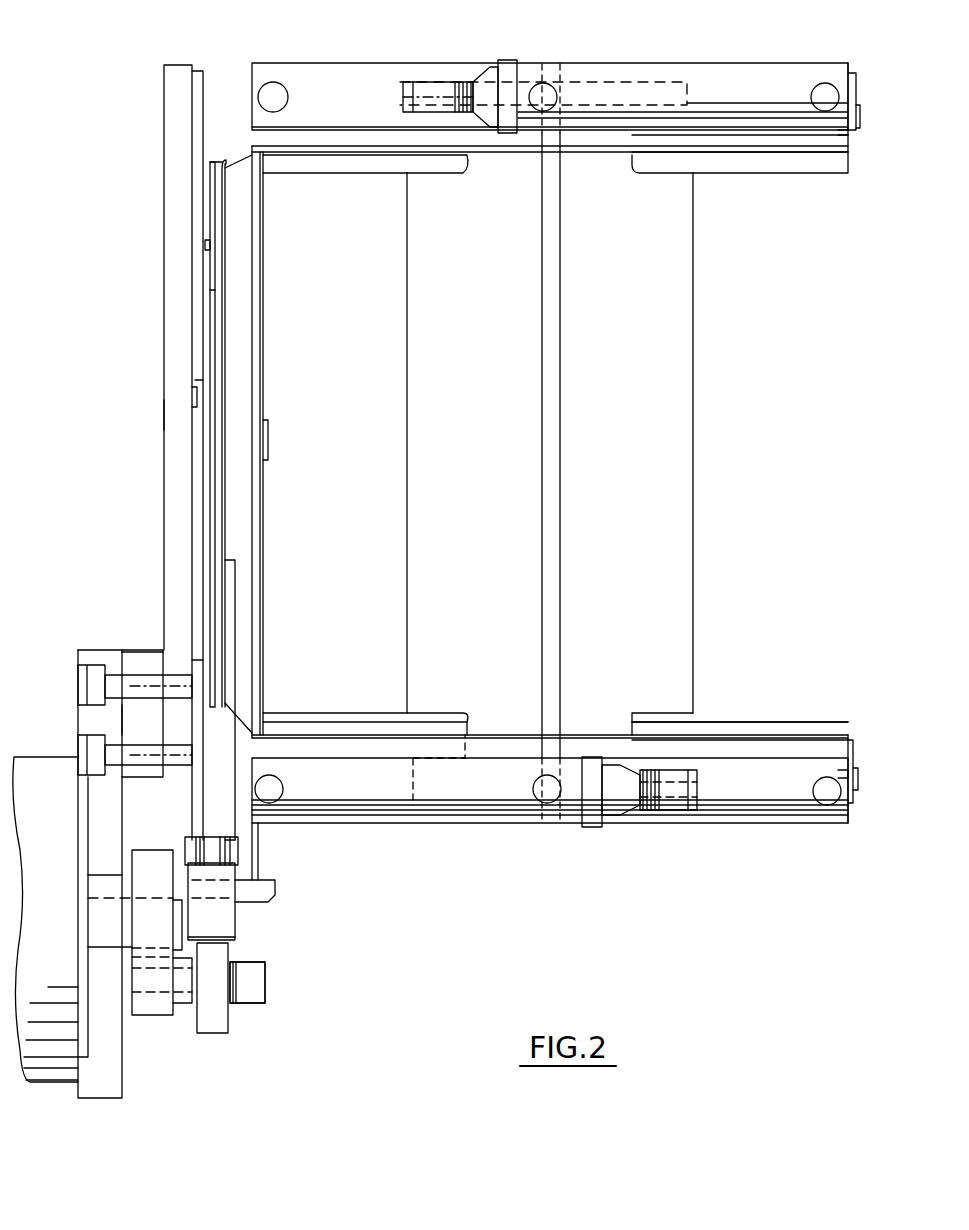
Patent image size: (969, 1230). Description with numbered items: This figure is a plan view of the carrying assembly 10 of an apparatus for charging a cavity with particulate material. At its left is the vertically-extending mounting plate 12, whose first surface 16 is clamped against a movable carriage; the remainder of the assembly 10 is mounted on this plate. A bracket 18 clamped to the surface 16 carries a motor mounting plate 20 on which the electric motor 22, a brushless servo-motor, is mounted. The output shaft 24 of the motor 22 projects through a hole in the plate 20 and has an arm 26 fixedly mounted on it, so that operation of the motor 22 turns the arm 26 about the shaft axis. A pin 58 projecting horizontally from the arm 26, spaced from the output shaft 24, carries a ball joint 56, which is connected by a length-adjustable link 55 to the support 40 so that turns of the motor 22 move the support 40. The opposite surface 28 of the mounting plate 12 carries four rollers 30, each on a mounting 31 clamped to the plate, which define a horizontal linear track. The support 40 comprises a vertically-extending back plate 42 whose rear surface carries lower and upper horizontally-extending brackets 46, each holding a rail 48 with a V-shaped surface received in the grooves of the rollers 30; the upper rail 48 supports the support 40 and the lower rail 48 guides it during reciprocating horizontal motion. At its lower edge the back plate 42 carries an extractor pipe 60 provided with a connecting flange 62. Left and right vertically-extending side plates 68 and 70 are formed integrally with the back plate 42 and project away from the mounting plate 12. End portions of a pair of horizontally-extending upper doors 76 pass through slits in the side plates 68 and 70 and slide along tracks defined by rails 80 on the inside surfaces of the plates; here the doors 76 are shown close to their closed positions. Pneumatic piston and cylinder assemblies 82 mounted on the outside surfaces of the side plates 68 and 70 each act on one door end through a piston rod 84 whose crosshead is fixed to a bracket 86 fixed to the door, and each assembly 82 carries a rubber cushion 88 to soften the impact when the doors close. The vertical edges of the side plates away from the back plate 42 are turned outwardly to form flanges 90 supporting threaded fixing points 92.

The carrying assembly 10 is at (345, 866).
The mounting plate 12 is at (178, 415).
The first surface 16 is at (170, 78).
The bracket 18 is at (135, 660).
The motor mounting plate 20 is at (110, 1082).
The electric motor 22 is at (48, 768).
The output shaft 24 is at (123, 938).
The arm 26 is at (150, 858).
The opposite surface 28 is at (196, 95).
The rollers 30 is at (222, 165).
The mounting 31 is at (212, 113).
The support 40 is at (735, 450).
The back plate 42 is at (250, 250).
The horizontally-extending bracket 46 is at (233, 212).
The rail 48 is at (210, 297).
The link 55 is at (200, 382).
The ball joint 56 is at (230, 1010).
The pin 58 is at (252, 993).
The extractor pipe 60 is at (248, 848).
The connecting flange 62 is at (228, 917).
The left side plate 68 is at (785, 720).
The right side plate 70 is at (832, 150).
The upper doors 76 is at (420, 412).
The rails 80 is at (740, 168).
The pneumatic piston and cylinder assemblies 82 is at (322, 85).
The piston rod 84 is at (468, 82).
The bracket 86 is at (418, 80).
The rubber cushion 88 is at (515, 62).
The flanges 90 is at (848, 75).
The threaded fixing points 92 is at (848, 135).